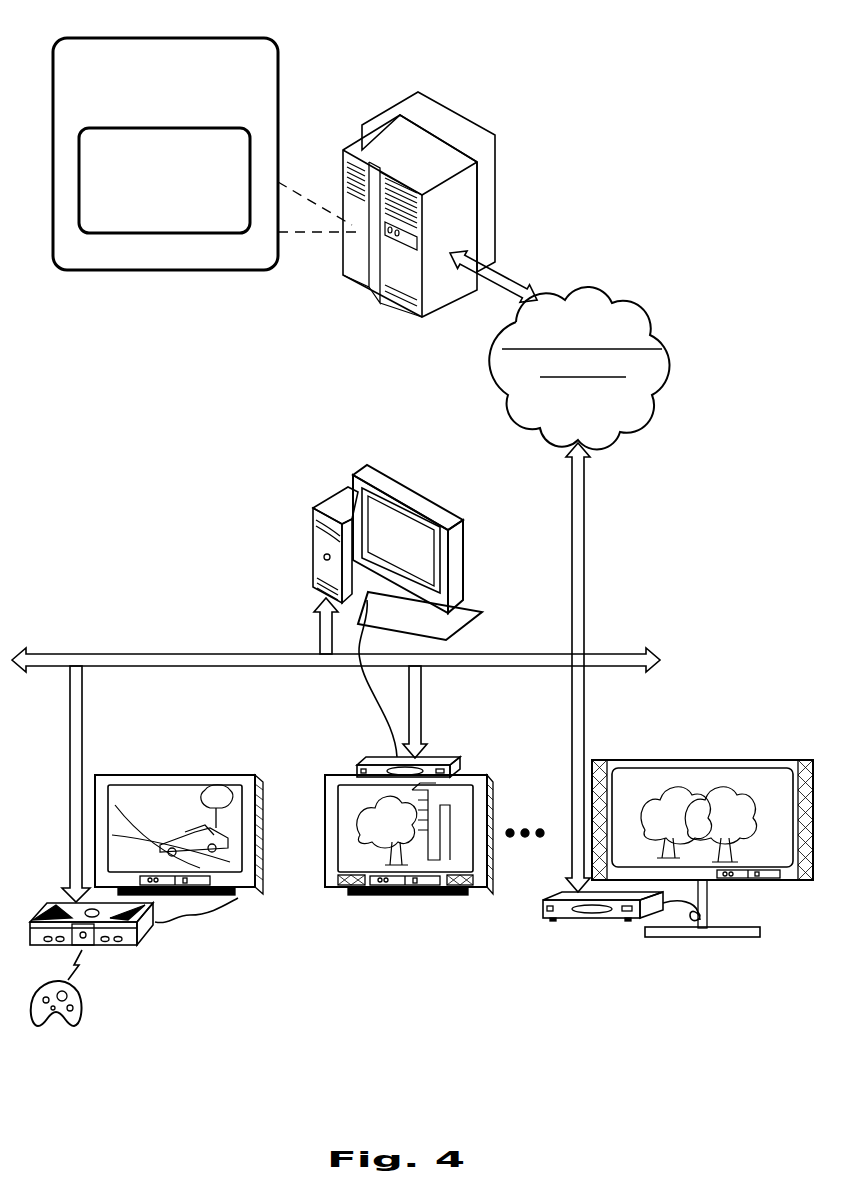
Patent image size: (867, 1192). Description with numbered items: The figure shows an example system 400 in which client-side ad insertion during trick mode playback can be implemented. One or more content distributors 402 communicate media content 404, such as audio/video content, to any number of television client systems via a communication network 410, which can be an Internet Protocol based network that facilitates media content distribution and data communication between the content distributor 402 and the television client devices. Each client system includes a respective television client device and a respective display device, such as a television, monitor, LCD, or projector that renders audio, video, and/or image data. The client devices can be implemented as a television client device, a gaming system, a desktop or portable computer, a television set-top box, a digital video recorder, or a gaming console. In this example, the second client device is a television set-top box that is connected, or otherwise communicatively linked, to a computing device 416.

The system 400 is at (725, 29).
The content distributor 402 is at (184, 110).
The media content 404 is at (184, 205).
The communication network 410 is at (603, 415).
The computing device 416 is at (337, 508).